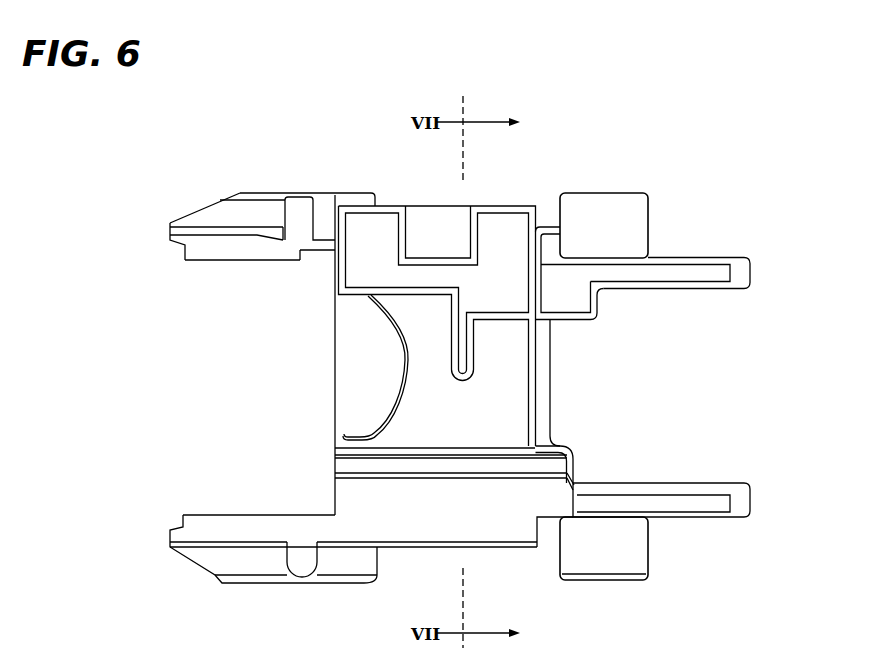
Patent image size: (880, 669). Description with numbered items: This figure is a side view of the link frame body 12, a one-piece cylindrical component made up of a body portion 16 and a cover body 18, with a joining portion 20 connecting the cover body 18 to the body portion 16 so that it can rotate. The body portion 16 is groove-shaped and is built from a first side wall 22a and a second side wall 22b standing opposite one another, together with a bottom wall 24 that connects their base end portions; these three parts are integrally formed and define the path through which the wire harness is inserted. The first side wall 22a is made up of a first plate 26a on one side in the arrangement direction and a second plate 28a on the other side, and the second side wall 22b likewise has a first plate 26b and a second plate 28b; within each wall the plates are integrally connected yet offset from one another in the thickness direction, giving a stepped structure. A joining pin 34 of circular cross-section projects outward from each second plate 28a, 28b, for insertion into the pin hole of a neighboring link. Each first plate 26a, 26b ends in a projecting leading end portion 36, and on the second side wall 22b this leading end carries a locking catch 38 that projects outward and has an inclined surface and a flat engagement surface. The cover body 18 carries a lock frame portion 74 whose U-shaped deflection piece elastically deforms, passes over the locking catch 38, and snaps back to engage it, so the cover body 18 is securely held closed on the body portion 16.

The link frame body 12 is at (533, 143).
The body portion 16 is at (705, 218).
The cover body 18 is at (427, 415).
The joining portion 20 is at (350, 467).
The first side wall 22a is at (497, 520).
The second side wall 22b is at (332, 250).
The bottom wall 24 is at (355, 340).
The first plate 26a is at (237, 545).
The first plate 26b is at (233, 215).
The second plate 28a is at (663, 505).
The second plate 28b is at (664, 272).
The joining pin 34 is at (612, 218).
The projecting leading end portion 36 is at (560, 280).
The locking catch 38 is at (432, 233).
The lock frame portion 74 is at (514, 197).